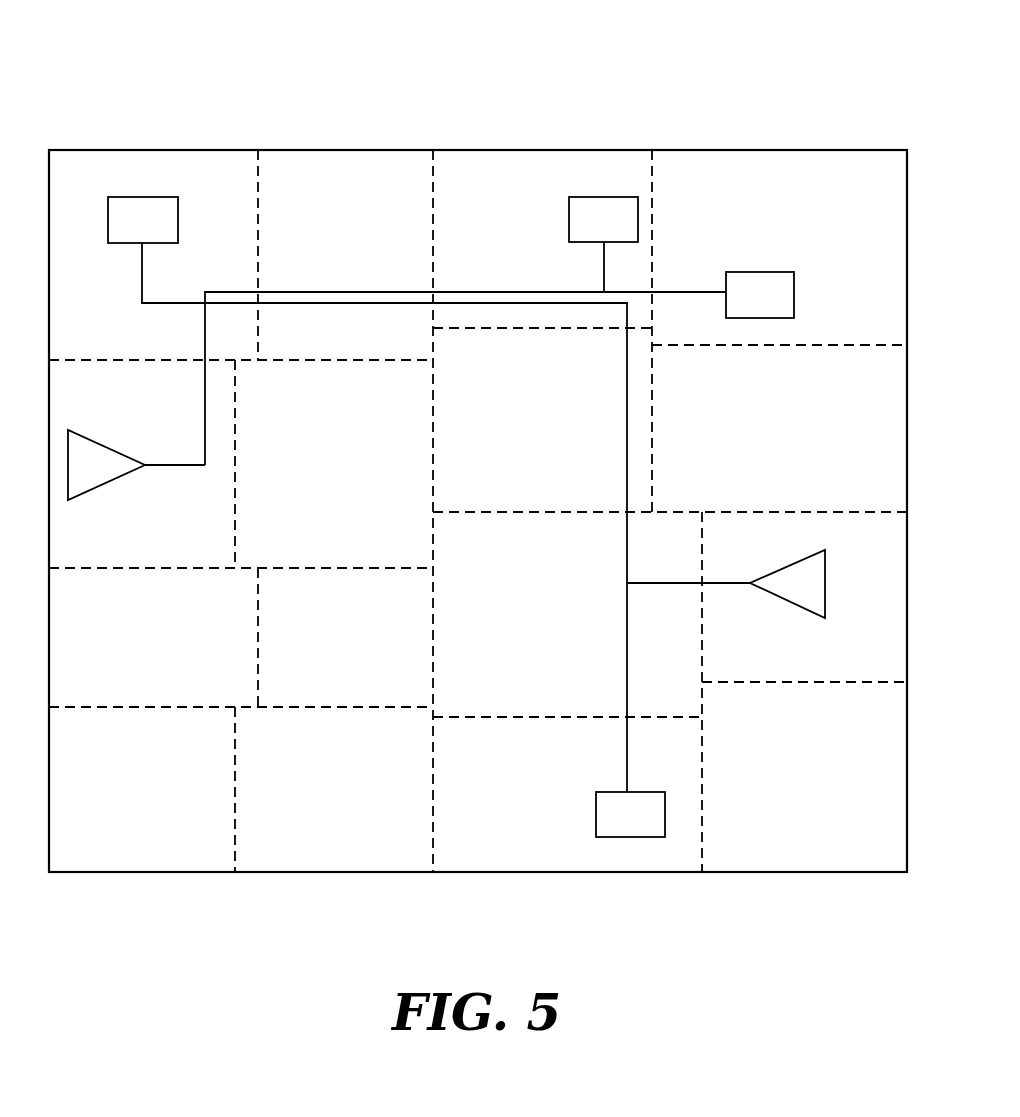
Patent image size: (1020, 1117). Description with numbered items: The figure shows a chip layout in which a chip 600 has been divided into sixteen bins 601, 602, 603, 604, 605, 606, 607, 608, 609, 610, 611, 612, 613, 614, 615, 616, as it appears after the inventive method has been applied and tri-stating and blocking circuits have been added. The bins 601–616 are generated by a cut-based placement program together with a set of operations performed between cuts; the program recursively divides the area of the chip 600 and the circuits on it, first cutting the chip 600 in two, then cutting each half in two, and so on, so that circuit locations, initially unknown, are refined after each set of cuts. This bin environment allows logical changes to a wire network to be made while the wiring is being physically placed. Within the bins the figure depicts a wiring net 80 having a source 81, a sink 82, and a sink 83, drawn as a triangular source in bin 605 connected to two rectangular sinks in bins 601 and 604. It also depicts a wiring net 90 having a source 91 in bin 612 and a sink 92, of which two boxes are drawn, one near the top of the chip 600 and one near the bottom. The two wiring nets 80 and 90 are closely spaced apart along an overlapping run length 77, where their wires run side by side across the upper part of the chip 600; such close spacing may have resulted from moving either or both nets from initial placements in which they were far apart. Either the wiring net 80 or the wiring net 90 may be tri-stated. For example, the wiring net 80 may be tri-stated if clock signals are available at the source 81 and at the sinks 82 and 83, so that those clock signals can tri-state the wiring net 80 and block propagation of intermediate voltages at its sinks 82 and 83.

The chip 600 is at (481, 122).
The bin 601 is at (116, 194).
The bin 602 is at (322, 194).
The bin 603 is at (497, 194).
The bin 604 is at (715, 194).
The bin 605 is at (116, 402).
The bin 606 is at (300, 402).
The bin 607 is at (500, 369).
The bin 608 is at (715, 384).
The bin 609 is at (116, 612).
The bin 610 is at (322, 612).
The bin 611 is at (497, 554).
The bin 612 is at (767, 554).
The bin 613 is at (116, 752).
The bin 614 is at (300, 752).
The bin 615 is at (497, 762).
The bin 616 is at (767, 726).
The overlapping run length 77 is at (344, 292).
The wiring net 80 is at (205, 437).
The wiring net 90 is at (627, 688).
The sink 92 is at (125, 234).
The sink 82 is at (585, 234).
The sink 83 is at (742, 309).
The source 81 is at (76, 479).
The source 91 is at (782, 597).